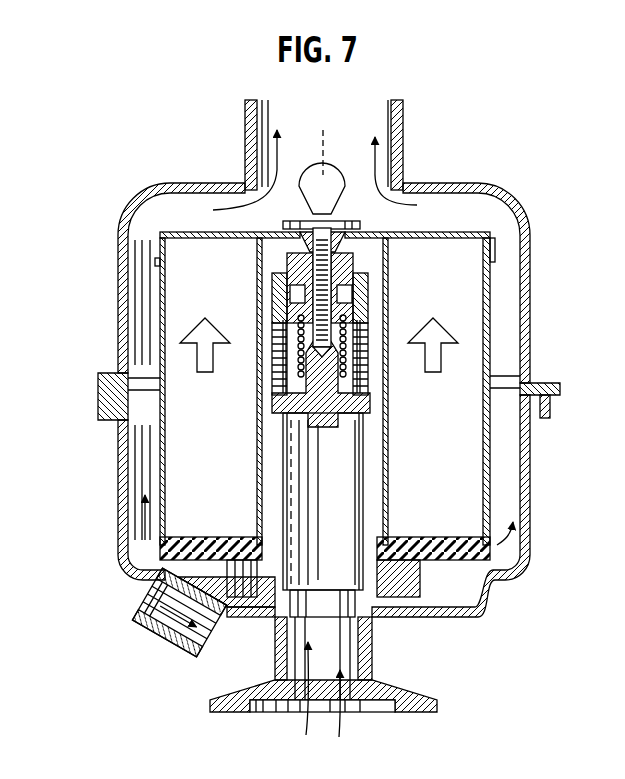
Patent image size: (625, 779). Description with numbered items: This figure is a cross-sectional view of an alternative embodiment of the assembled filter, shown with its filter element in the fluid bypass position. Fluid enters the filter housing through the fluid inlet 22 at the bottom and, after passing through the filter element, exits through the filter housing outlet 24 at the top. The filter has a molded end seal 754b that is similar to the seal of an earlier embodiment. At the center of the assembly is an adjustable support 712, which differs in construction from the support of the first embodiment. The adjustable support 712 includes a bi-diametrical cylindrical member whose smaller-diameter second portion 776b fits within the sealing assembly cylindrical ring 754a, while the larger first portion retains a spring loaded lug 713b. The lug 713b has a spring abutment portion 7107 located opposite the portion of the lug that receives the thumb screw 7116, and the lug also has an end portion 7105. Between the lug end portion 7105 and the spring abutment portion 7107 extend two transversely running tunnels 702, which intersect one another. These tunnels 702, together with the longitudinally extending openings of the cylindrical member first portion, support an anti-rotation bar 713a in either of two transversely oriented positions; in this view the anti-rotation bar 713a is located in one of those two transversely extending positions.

The fluid inlet 22 is at (353, 708).
The filter housing outlet 24 is at (305, 115).
The thumb screw 7116 is at (362, 225).
The anti-rotation bar 713a is at (385, 343).
The lug 713b is at (297, 353).
The adjustable support 712 is at (385, 379).
The spring abutment portion 7107 is at (295, 383).
The lug end portion 7105 is at (300, 458).
The cylindrical member second portion 776b is at (290, 505).
The tunnels 702 is at (340, 432).
The sealing assembly cylindrical ring 754a is at (117, 567).
The molded end seal 754b is at (497, 540).